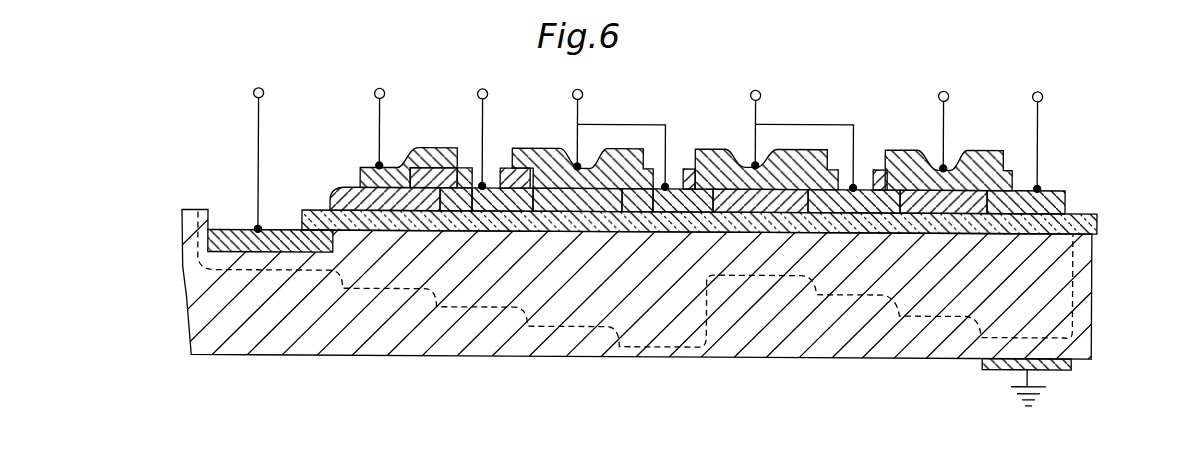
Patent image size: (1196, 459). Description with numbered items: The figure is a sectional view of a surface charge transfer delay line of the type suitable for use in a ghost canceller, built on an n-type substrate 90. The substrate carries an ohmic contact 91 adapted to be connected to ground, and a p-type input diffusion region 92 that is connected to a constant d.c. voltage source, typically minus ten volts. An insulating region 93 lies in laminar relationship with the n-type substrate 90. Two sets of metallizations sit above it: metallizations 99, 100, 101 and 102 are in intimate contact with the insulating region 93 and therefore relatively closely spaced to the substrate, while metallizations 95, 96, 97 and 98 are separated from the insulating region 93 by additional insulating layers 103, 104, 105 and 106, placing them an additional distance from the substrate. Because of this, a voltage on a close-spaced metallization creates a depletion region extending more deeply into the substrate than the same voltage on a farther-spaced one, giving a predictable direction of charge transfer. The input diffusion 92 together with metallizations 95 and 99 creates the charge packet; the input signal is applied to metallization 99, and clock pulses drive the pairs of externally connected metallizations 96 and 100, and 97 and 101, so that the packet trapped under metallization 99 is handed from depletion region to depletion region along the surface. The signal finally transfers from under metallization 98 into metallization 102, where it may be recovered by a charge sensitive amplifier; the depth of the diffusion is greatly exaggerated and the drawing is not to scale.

The n-type substrate 90 is at (380, 336).
The ohmic contact 91 is at (1022, 358).
The p-type input diffusion region 92 is at (248, 250).
The insulating region 93 is at (1082, 221).
The metallization 95 is at (420, 158).
The metallization 96 is at (547, 152).
The metallization 97 is at (732, 158).
The metallization 98 is at (970, 165).
The metallization 99 is at (471, 178).
The metallization 100 is at (671, 186).
The metallization 101 is at (862, 192).
The metallization 102 is at (1040, 203).
The additional insulating layer 103 is at (347, 197).
The additional insulating layer 104 is at (502, 178).
The additional insulating layer 105 is at (688, 184).
The additional insulating layer 106 is at (877, 184).